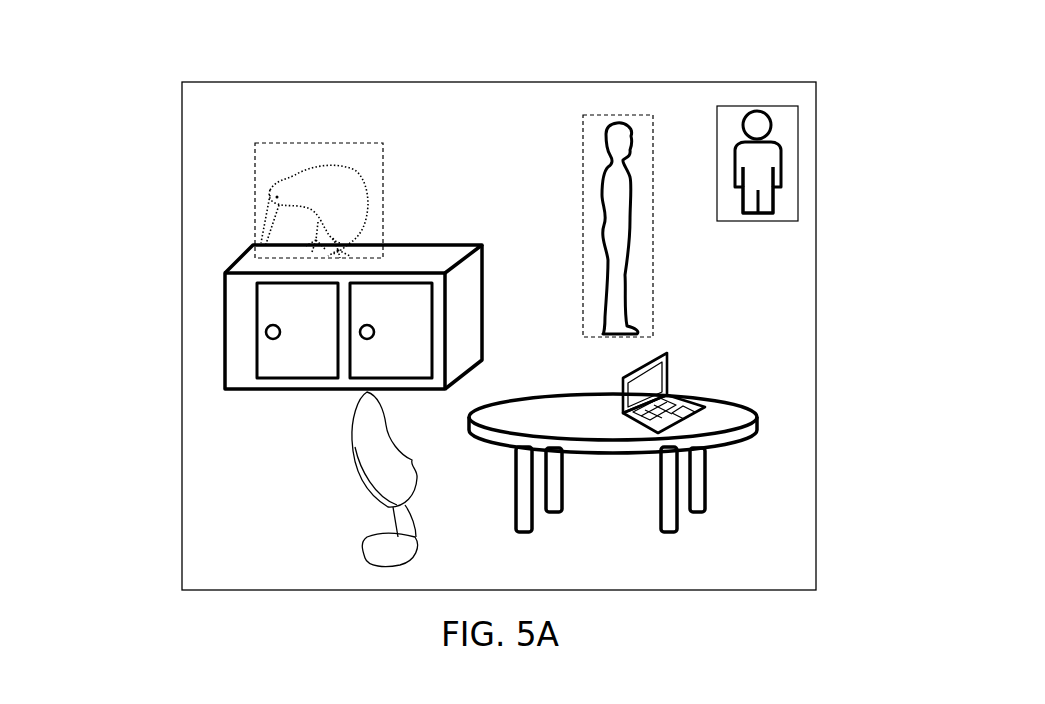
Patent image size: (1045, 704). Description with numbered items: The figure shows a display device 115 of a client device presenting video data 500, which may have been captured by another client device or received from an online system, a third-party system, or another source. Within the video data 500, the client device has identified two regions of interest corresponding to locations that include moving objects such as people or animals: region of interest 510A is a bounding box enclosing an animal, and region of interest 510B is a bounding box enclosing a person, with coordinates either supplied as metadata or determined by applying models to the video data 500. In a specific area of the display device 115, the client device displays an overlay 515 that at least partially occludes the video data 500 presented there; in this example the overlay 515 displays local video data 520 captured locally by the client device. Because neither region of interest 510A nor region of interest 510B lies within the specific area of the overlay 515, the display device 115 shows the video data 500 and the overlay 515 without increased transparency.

The display device 115 is at (180, 337).
The video data 500 is at (240, 123).
The region of interest 510A is at (253, 203).
The region of interest 510B is at (617, 114).
The overlay 515 is at (757, 106).
The local video data 520 is at (781, 167).